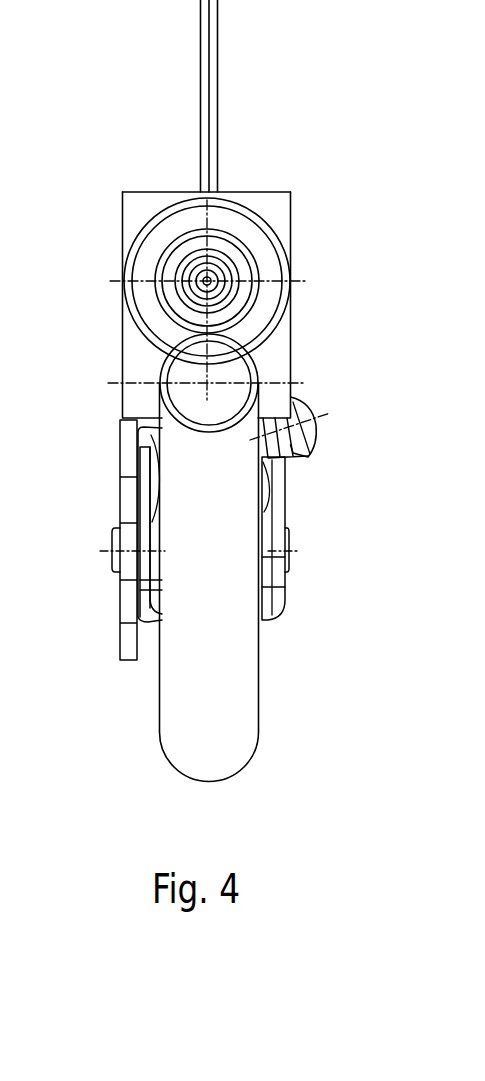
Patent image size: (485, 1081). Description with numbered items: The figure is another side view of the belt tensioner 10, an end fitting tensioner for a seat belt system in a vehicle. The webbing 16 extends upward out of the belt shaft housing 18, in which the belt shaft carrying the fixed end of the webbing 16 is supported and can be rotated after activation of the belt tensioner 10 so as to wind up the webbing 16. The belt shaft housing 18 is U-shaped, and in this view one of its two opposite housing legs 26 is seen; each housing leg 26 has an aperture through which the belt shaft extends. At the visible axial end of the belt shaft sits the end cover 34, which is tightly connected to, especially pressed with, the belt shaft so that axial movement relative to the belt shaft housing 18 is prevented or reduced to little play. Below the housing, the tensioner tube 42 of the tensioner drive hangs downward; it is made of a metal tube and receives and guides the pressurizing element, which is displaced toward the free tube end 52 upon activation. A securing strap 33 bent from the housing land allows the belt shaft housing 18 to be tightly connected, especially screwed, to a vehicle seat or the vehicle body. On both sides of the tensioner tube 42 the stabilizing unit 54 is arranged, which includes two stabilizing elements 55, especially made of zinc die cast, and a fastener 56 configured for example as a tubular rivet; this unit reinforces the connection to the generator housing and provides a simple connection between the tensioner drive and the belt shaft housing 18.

The belt tensioner 10 is at (118, 113).
The webbing 16 is at (213, 108).
The belt shaft housing 18 is at (142, 365).
The housing leg 26 is at (133, 212).
The securing strap 33 is at (125, 608).
The end cover 34 is at (268, 270).
The tensioner tube 42 is at (238, 708).
The free tube end 52 is at (235, 378).
The stabilizing unit 54 is at (288, 607).
The stabilizing elements 55 is at (145, 512).
The fastener 56 is at (115, 560).